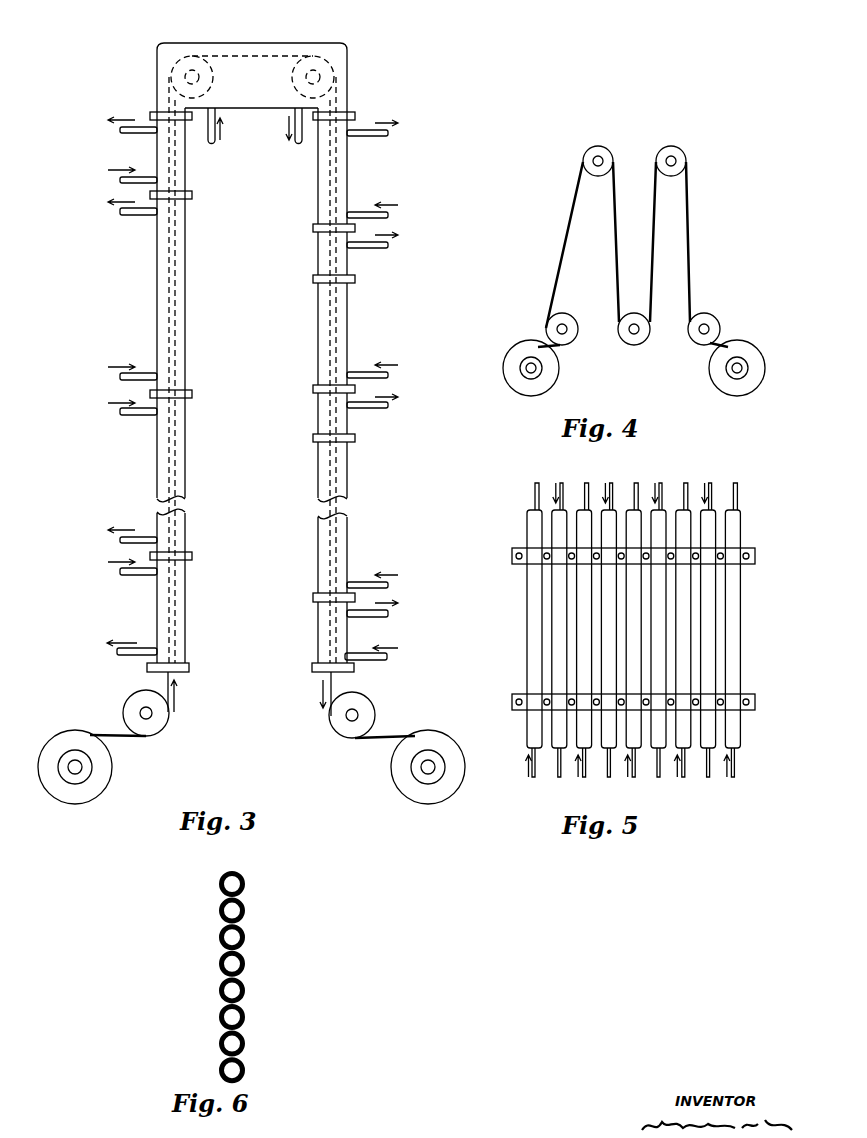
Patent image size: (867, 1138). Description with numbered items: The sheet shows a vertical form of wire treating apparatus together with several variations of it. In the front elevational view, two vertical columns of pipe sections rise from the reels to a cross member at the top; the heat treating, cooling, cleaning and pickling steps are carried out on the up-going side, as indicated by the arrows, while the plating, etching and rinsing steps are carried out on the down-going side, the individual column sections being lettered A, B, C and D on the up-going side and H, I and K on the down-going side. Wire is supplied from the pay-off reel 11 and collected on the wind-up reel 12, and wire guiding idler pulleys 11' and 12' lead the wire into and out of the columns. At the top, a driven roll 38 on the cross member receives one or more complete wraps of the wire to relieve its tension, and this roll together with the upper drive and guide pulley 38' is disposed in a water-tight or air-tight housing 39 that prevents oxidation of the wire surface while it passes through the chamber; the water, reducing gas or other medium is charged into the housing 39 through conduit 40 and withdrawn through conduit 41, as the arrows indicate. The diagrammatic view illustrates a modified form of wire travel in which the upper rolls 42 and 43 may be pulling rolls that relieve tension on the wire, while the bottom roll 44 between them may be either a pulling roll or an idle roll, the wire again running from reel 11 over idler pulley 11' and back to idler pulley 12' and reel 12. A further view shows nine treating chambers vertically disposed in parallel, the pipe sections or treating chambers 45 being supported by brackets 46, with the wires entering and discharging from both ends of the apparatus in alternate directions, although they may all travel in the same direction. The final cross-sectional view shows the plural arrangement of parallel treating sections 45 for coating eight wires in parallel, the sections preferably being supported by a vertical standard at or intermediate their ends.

In FIG. 3, the pay-off reel 11 is at (92, 777).
In FIG. 4, the pay-off reel 11 is at (521, 384).
In FIG. 3, the wire guiding idler pulley 11' is at (166, 709).
In FIG. 4, the wire guiding idler pulley 11' is at (577, 339).
In FIG. 3, the wind-up reel 12 is at (410, 783).
In FIG. 4, the wind-up reel 12 is at (741, 384).
In FIG. 3, the wire guiding idler pulley 12' is at (332, 712).
In FIG. 4, the wire guiding idler pulley 12' is at (693, 340).
In FIG. 3, the driven roll 38 is at (214, 77).
In FIG. 3, the upper drive and guide pulley 38' is at (349, 79).
In FIG. 3, the upper housing 39 is at (347, 50).
In FIG. 3, the conduit 40 is at (215, 143).
In FIG. 3, the conduit 41 is at (295, 143).
In FIG. 4, the upper roll 42 is at (608, 150).
In FIG. 4, the upper roll 43 is at (681, 150).
In FIG. 4, the bottom roll 44 is at (636, 345).
In FIG. 5, the pipe section or treating chamber 45 is at (527, 528).
In FIG. 6, the pipe section or treating chamber 45 is at (245, 964).
In FIG. 5, the bracket 46 is at (520, 566).
In FIG. 3, the column section A is at (185, 625).
In FIG. 3, the column section B is at (185, 470).
In FIG. 3, the column section C is at (185, 336).
In FIG. 3, the column section D is at (185, 175).
In FIG. 3, the column section H is at (318, 180).
In FIG. 3, the column section I is at (318, 633).
In FIG. 3, the column section K is at (318, 258).